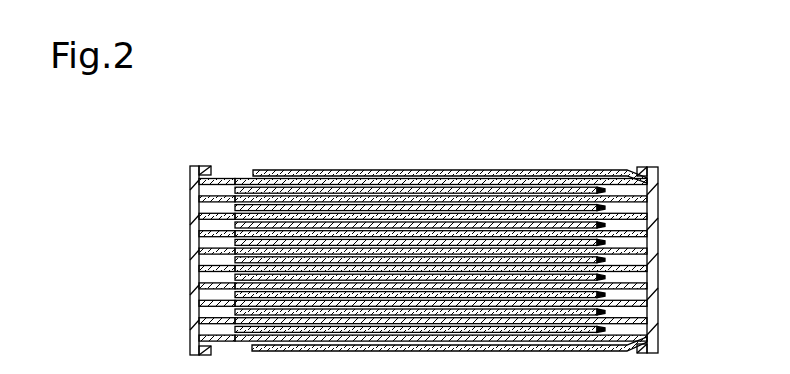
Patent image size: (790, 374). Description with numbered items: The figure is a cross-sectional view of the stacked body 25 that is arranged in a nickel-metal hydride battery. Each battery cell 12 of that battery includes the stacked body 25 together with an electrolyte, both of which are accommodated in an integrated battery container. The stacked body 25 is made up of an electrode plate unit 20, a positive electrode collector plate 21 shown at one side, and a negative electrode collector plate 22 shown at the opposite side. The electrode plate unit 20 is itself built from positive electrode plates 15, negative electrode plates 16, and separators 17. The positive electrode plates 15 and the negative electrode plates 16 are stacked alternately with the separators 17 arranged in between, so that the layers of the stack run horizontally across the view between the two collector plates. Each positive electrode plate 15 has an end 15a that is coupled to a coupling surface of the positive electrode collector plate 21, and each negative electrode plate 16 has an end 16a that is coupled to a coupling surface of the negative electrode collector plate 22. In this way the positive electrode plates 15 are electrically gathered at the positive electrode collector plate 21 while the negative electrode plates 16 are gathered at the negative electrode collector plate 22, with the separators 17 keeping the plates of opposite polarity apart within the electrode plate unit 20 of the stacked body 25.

The stacked body 25 is at (183, 156).
The battery cell 12 is at (412, 236).
The positive electrode plate 15 is at (308, 170).
The end 15a is at (196, 186).
The negative electrode plate 16 is at (243, 172).
The end 16a is at (632, 170).
The separator 17 is at (225, 178).
The electrode plate unit 20 is at (460, 170).
The positive electrode collector plate 21 is at (190, 258).
The negative electrode collector plate 22 is at (660, 250).